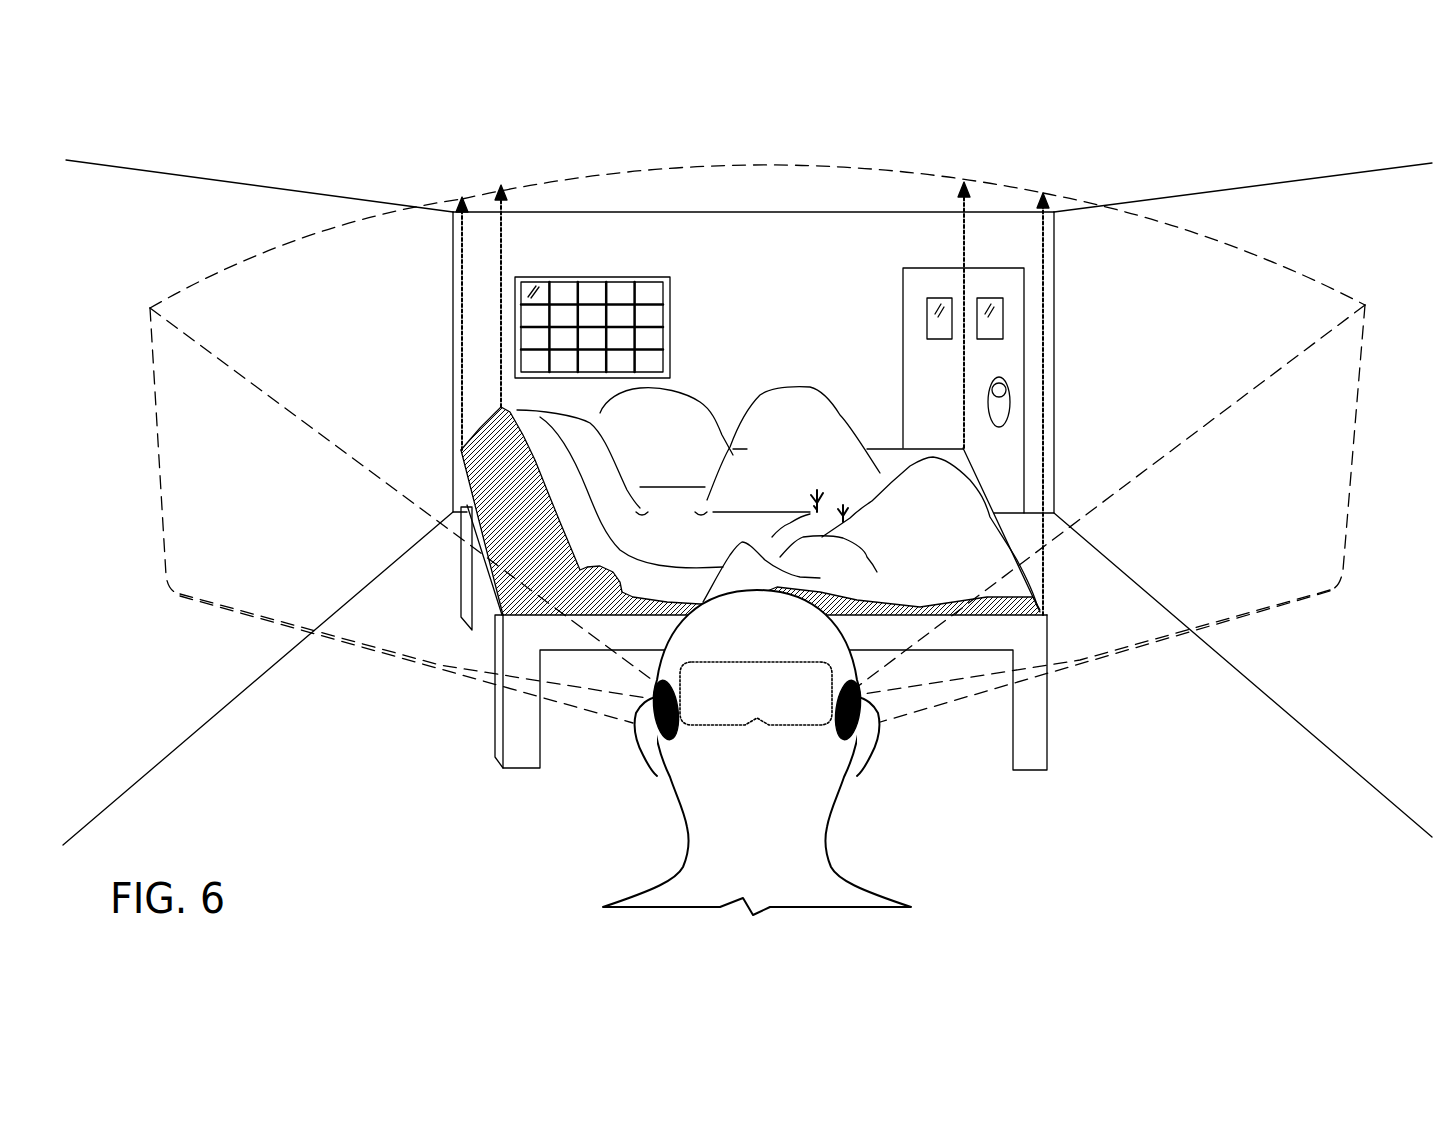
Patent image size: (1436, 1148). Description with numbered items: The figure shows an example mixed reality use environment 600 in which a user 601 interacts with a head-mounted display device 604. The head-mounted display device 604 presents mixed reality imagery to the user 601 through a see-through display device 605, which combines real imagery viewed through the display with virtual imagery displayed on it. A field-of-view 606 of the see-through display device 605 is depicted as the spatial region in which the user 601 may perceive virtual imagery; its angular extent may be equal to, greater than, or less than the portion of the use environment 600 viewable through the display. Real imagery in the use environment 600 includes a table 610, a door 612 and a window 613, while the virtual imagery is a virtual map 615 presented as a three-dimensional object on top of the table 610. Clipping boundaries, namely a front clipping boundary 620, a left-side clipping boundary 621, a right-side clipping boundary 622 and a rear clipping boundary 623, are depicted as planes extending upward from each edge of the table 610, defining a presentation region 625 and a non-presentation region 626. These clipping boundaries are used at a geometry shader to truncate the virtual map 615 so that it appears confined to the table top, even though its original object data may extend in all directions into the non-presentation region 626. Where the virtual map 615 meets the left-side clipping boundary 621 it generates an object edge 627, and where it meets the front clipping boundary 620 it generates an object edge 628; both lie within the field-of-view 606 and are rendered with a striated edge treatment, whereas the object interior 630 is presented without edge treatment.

The use environment 600 is at (750, 130).
The user 601 is at (773, 858).
The head-mounted display device 604 is at (838, 742).
The see-through display device 605 is at (693, 660).
The field-of-view 606 is at (1253, 255).
The table 610 is at (1026, 641).
The door 612 is at (948, 374).
The window 613 is at (635, 273).
The virtual map 615 is at (947, 525).
The clipping boundary (front) 620 is at (800, 200).
The clipping boundary (left side) 621 is at (463, 271).
The clipping boundary (right side) 622 is at (1023, 250).
The clipping boundary (rear) 623 is at (552, 242).
The presentation region 625 is at (748, 338).
The non-presentation region 626 is at (358, 439).
The object edge 627 is at (478, 460).
The object edge 628 is at (631, 611).
The object interior 630 is at (687, 553).